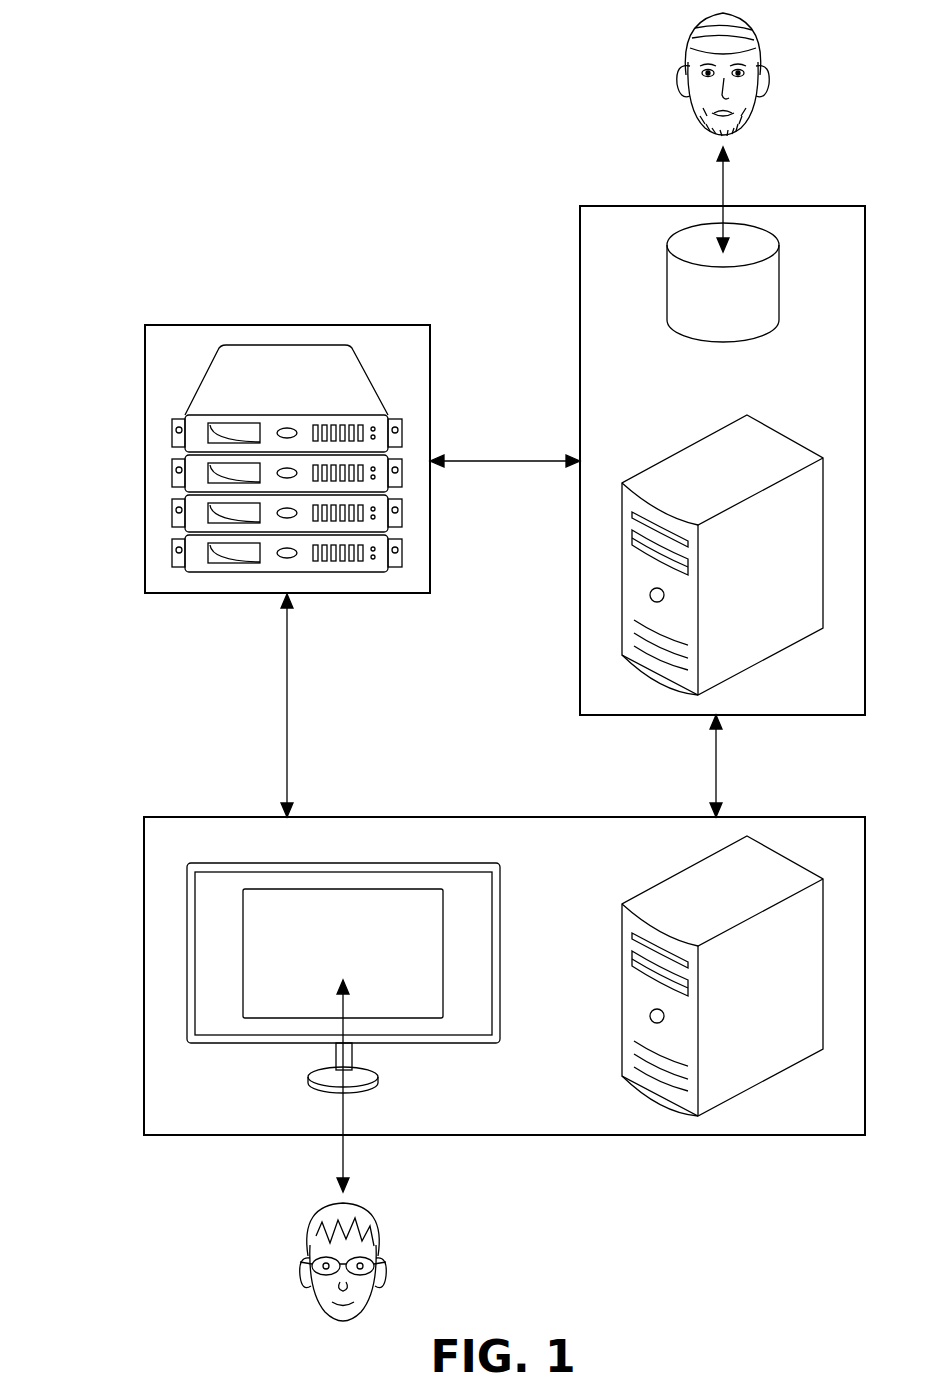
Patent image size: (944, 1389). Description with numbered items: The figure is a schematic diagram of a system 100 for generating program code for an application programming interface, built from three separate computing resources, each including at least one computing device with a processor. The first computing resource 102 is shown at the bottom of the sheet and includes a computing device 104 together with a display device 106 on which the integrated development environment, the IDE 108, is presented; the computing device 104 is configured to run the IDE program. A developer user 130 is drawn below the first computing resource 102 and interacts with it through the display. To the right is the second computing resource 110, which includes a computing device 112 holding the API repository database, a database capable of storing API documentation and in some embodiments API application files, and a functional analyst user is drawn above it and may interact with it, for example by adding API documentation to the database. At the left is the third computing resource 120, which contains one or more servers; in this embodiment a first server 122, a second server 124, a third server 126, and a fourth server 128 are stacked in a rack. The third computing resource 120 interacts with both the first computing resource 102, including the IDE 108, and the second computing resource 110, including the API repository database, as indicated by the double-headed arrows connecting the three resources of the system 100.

The system 100 is at (292, 86).
The first computing resource 102 is at (495, 817).
The computing device 104 is at (722, 976).
The display device 106 is at (500, 893).
The IDE 108 is at (343, 953).
The second computing resource 110 is at (580, 255).
The computing device 112 is at (722, 555).
The third computing resource 120 is at (272, 325).
The first server 122 is at (172, 428).
The second server 124 is at (172, 465).
The third server 126 is at (172, 515).
The fourth server 128 is at (172, 548).
The developer user 130 is at (300, 1247).